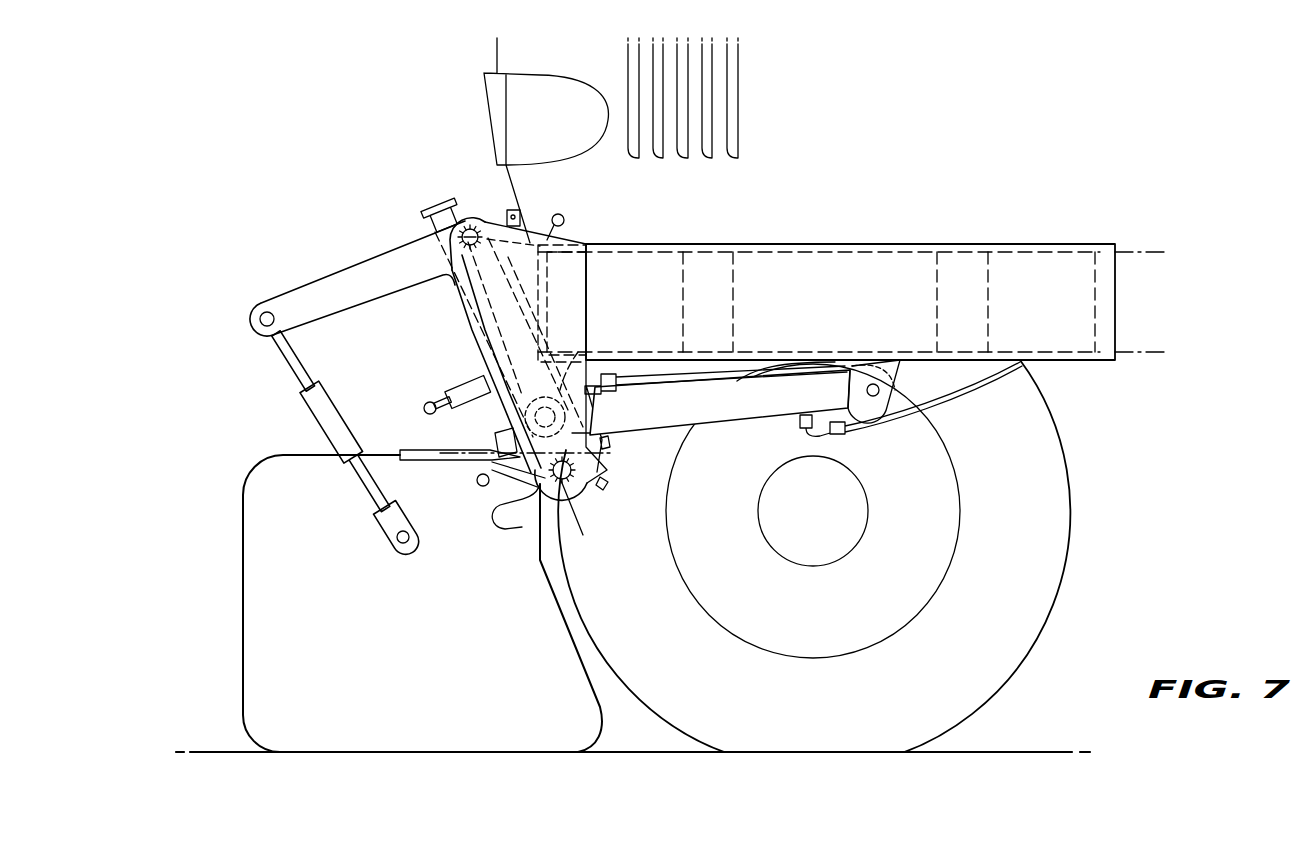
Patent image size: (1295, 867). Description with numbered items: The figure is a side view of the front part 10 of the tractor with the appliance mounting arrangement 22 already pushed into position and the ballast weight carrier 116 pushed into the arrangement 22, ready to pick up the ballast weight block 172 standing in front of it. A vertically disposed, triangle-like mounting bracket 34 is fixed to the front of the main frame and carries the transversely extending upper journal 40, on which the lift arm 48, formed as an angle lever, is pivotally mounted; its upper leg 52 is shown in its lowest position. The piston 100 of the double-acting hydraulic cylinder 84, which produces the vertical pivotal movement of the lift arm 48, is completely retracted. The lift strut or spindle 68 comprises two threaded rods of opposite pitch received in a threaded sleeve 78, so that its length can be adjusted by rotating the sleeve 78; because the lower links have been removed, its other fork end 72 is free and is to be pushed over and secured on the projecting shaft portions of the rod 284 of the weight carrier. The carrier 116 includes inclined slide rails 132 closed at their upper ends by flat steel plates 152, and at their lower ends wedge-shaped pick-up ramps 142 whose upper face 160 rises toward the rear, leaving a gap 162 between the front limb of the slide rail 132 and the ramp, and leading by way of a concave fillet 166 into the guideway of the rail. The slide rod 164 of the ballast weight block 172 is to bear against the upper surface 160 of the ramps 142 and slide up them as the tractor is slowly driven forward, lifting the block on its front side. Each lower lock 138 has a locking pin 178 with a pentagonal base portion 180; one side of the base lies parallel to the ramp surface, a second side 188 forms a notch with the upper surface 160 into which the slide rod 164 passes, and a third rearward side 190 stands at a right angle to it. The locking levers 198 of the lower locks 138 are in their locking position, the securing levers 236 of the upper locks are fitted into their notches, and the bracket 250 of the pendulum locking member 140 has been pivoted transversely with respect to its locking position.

The front part 10 is at (428, 85).
The appliance mounting arrangement 22 is at (321, 275).
The mounting bracket 34 is at (572, 241).
The upper journal 40 is at (474, 228).
The lift arm 48 is at (378, 248).
The upper leg 52 is at (323, 278).
The lift strut 68 is at (315, 459).
The other fork end 72 is at (385, 521).
The threaded sleeve 78 is at (340, 412).
The hydraulic cylinder 84 is at (764, 418).
The hydraulic rod 100 is at (592, 341).
The ballast weight carrier 116 is at (462, 310).
The slide rails 132 is at (458, 205).
The lower lock 138 is at (466, 355).
The pendulum locking bar 140 is at (630, 421).
The pick-up ramps 142 is at (519, 513).
The flat steel plates 152 is at (436, 205).
The upper face of ramp 160 is at (480, 488).
The gap 162 is at (608, 448).
The slide rod 164 is at (477, 489).
The concave fillet 166 is at (587, 490).
The ballast weight block 172 is at (243, 620).
The locking pin 178 is at (497, 438).
The pentagonal base portion 180 is at (492, 460).
The second side 188 is at (495, 470).
The third rearward side 190 is at (568, 492).
The locking lever 198 is at (432, 400).
The securing levers 236 is at (553, 214).
The bracket 250 is at (607, 481).
The rod 284 is at (405, 545).